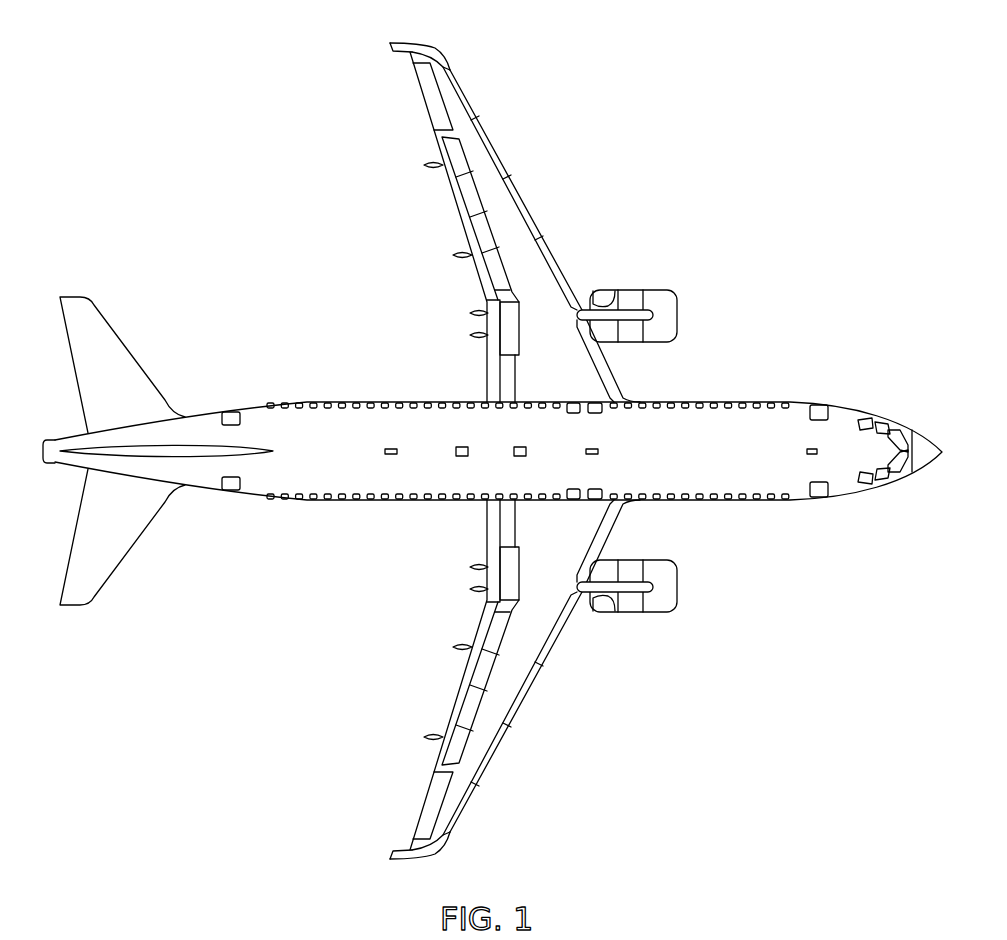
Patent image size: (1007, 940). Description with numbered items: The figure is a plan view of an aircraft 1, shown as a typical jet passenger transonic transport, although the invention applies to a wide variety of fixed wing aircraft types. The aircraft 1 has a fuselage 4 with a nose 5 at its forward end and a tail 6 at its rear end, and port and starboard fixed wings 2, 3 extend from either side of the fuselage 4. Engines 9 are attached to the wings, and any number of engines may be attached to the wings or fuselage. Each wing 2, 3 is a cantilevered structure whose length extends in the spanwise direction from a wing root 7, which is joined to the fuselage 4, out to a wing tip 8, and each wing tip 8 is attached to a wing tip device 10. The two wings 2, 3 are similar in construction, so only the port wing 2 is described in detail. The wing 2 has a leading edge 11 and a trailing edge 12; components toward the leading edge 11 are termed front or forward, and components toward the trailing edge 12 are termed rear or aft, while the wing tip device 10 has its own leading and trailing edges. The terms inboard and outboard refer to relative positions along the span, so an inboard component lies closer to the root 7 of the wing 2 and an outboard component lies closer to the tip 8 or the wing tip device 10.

The aircraft 1 is at (486, 439).
The port fixed wing 2 is at (503, 217).
The starboard fixed wing 3 is at (515, 650).
The fuselage 4 is at (718, 432).
The nose 5 is at (930, 447).
The tail 6 is at (47, 443).
The wing root 7 is at (560, 402).
The wing tip 8 is at (442, 68).
The engines 9 is at (668, 308).
The wing tip device 10 is at (393, 45).
The leading edge 11 is at (500, 157).
The trailing edge 12 is at (428, 123).